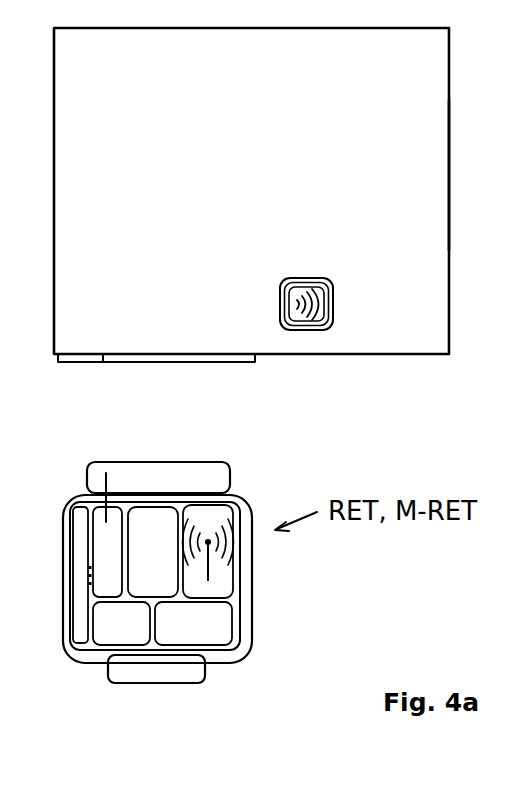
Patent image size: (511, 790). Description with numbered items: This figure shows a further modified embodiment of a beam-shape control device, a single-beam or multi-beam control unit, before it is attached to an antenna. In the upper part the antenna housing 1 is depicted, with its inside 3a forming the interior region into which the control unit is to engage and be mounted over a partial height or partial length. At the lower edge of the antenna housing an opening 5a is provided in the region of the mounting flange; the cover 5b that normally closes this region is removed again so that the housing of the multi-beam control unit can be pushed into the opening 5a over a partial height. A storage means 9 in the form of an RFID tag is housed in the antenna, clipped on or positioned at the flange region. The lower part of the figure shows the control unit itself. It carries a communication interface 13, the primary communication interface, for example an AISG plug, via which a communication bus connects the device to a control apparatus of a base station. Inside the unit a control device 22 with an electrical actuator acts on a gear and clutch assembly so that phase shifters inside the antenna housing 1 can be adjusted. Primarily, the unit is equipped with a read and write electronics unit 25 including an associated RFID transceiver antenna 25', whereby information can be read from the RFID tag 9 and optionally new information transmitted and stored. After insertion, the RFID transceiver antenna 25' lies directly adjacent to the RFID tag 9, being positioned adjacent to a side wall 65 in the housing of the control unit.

The antenna housing 1 is at (231, 110).
The inside of the antenna housing 3a is at (426, 180).
The opening of the antenna housing 5a is at (157, 346).
The cover 5b is at (103, 362).
The storage means 9 is at (304, 279).
The communication interface 13 is at (183, 668).
The control device 22 is at (100, 533).
The read and write electronics unit 25 is at (276, 614).
The RFID transceiver antenna 25' is at (256, 528).
The side wall 65 is at (254, 600).